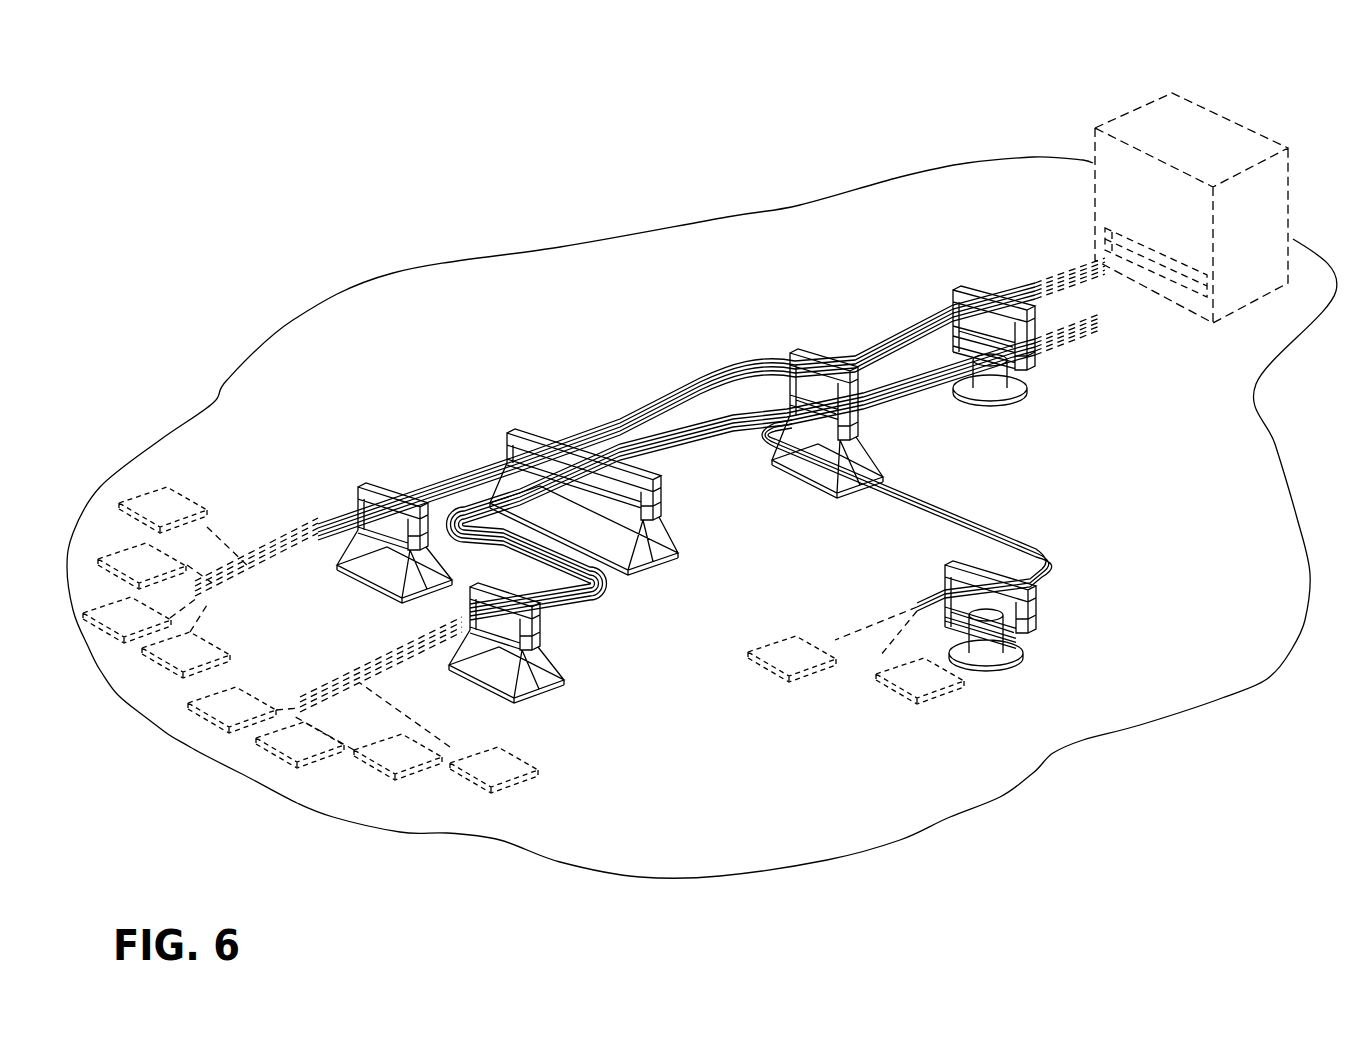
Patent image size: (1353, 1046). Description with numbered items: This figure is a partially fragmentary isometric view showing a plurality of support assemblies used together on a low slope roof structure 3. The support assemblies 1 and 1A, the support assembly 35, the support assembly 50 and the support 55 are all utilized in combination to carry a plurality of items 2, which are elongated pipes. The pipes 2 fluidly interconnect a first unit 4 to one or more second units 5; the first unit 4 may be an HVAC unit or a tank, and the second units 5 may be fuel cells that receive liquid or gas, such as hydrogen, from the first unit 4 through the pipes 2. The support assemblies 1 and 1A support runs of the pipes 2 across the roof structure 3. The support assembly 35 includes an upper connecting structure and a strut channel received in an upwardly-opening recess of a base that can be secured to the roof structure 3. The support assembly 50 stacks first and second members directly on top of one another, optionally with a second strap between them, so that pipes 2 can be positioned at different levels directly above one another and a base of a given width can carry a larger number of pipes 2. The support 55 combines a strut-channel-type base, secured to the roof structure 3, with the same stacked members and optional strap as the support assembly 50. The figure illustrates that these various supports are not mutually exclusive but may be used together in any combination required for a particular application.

The support assembly 1 is at (387, 480).
The support assembly 1A is at (545, 430).
The items 2 is at (868, 340).
The low slope roof structure 3 is at (1112, 709).
The first unit 4 is at (1247, 126).
The second units 5 is at (97, 605).
The support assembly 35 is at (1040, 603).
The support assembly 50 is at (790, 345).
The support 55 is at (965, 280).